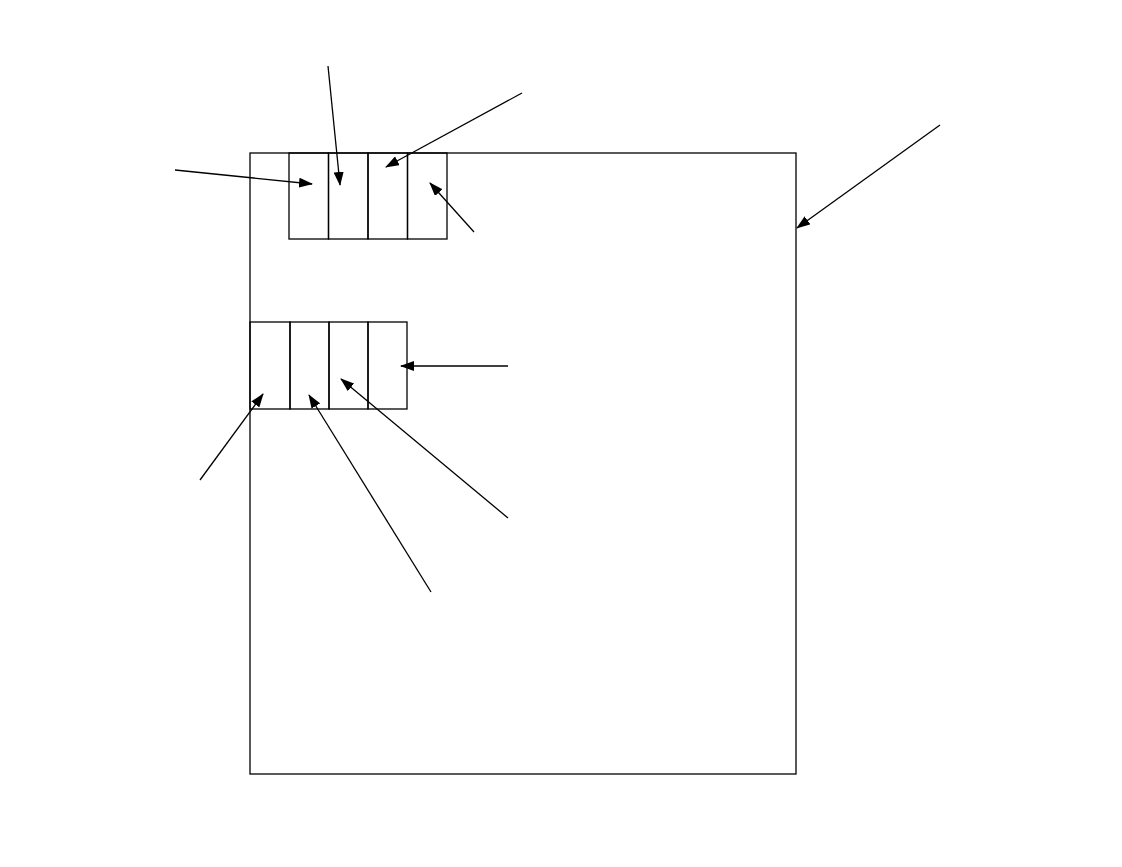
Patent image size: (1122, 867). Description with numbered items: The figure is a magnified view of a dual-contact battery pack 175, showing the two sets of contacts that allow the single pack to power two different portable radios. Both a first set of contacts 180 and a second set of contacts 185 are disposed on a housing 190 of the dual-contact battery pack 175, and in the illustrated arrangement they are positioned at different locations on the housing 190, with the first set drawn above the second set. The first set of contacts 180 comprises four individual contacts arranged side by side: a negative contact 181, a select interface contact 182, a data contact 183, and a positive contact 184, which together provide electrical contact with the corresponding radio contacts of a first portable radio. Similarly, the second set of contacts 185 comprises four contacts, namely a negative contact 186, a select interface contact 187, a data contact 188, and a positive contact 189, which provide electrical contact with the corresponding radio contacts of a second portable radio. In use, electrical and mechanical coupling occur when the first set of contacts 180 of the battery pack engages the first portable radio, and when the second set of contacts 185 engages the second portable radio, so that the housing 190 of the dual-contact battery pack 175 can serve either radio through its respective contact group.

The dual-contact battery pack 175 is at (1053, 48).
The first set of contacts 180 is at (368, 223).
The negative contact 181 is at (323, 232).
The select interface contact 182 is at (361, 232).
The data contact 183 is at (400, 232).
The positive contact 184 is at (428, 196).
The second set of contacts 185 is at (328, 341).
The negative contact 186 is at (283, 352).
The select interface contact 187 is at (322, 352).
The data contact 188 is at (361, 352).
The positive contact 189 is at (387, 365).
The housing 190 is at (800, 430).